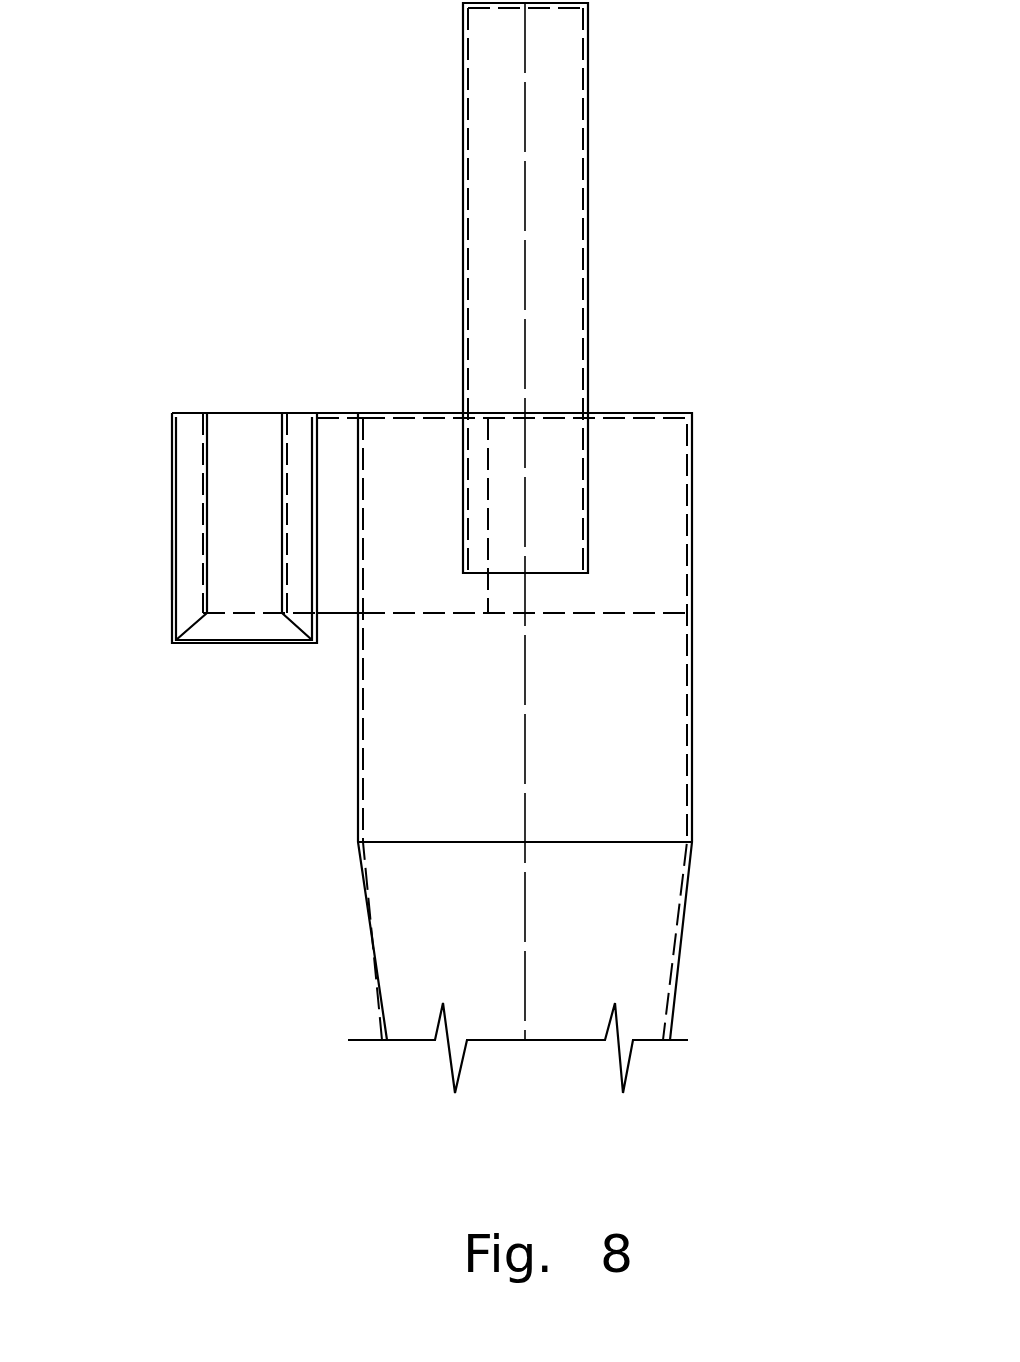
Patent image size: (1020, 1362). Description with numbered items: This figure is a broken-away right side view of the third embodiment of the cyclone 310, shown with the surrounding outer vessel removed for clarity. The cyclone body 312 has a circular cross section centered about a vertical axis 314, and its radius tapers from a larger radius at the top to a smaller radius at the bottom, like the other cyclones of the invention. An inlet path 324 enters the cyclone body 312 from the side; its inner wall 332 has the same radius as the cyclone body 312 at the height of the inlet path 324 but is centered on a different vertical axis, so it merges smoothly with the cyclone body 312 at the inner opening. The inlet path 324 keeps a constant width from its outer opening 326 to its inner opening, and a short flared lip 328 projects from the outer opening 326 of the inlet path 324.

The cyclone 310 is at (698, 347).
The cyclone body 312 is at (692, 732).
The vertical axis 314 is at (525, 713).
The inlet path 324 is at (267, 413).
The outer opening 326 is at (207, 513).
The flared lip 328 is at (172, 565).
The inner wall 332 is at (282, 539).